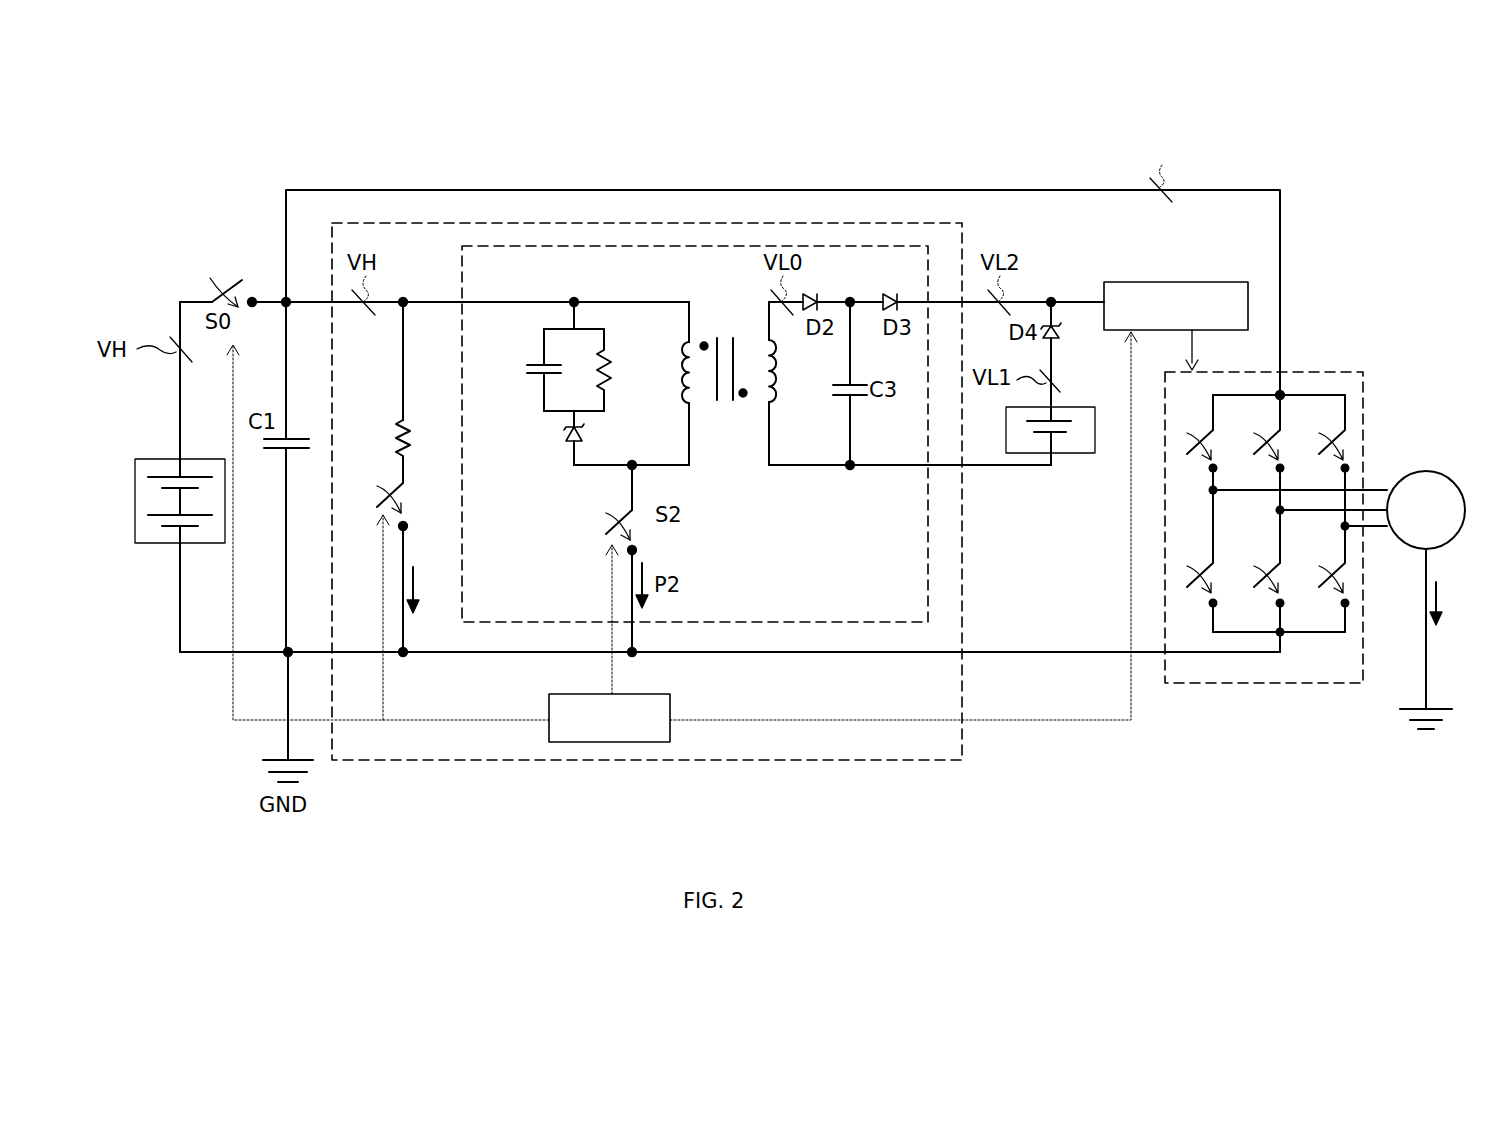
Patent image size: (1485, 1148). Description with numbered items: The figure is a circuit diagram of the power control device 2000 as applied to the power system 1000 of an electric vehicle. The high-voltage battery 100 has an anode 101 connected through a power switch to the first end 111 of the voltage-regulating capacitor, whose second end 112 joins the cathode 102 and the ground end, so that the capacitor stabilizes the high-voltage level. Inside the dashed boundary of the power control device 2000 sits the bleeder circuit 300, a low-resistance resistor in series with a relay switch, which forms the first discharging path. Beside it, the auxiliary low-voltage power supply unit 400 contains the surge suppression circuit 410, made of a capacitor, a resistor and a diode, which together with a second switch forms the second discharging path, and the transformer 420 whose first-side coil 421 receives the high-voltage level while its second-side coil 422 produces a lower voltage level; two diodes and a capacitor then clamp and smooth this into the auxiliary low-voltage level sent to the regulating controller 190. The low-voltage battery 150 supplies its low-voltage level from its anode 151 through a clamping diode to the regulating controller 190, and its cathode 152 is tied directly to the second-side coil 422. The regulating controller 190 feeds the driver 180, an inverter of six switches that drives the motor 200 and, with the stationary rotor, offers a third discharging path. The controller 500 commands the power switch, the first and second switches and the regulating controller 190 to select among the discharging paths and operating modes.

The power system 1000 is at (1313, 125).
The power control device 2000 is at (518, 223).
The auxiliary low-voltage power supply unit 400 is at (655, 245).
The high-voltage battery 100 is at (174, 477).
The anode of the HV battery 101 is at (180, 477).
The cathode of the HV battery 102 is at (178, 527).
The first end of the voltage-regulating capacitor 111 is at (289, 438).
The second end of the voltage-regulating capacitor 112 is at (288, 450).
The bleeder circuit 300 is at (370, 454).
The surge suppression circuit 410 is at (533, 416).
The transformer 420 is at (728, 408).
The first-side coil 421 is at (680, 392).
The second-side coil 422 is at (791, 383).
The low-voltage battery 150 is at (1060, 440).
The anode of the LV battery 151 is at (1055, 420).
The cathode of the LV battery 152 is at (1052, 433).
The regulating controller 190 is at (1160, 311).
The driver 180 is at (1312, 372).
The motor 200 is at (1410, 521).
The controller 500 is at (594, 723).